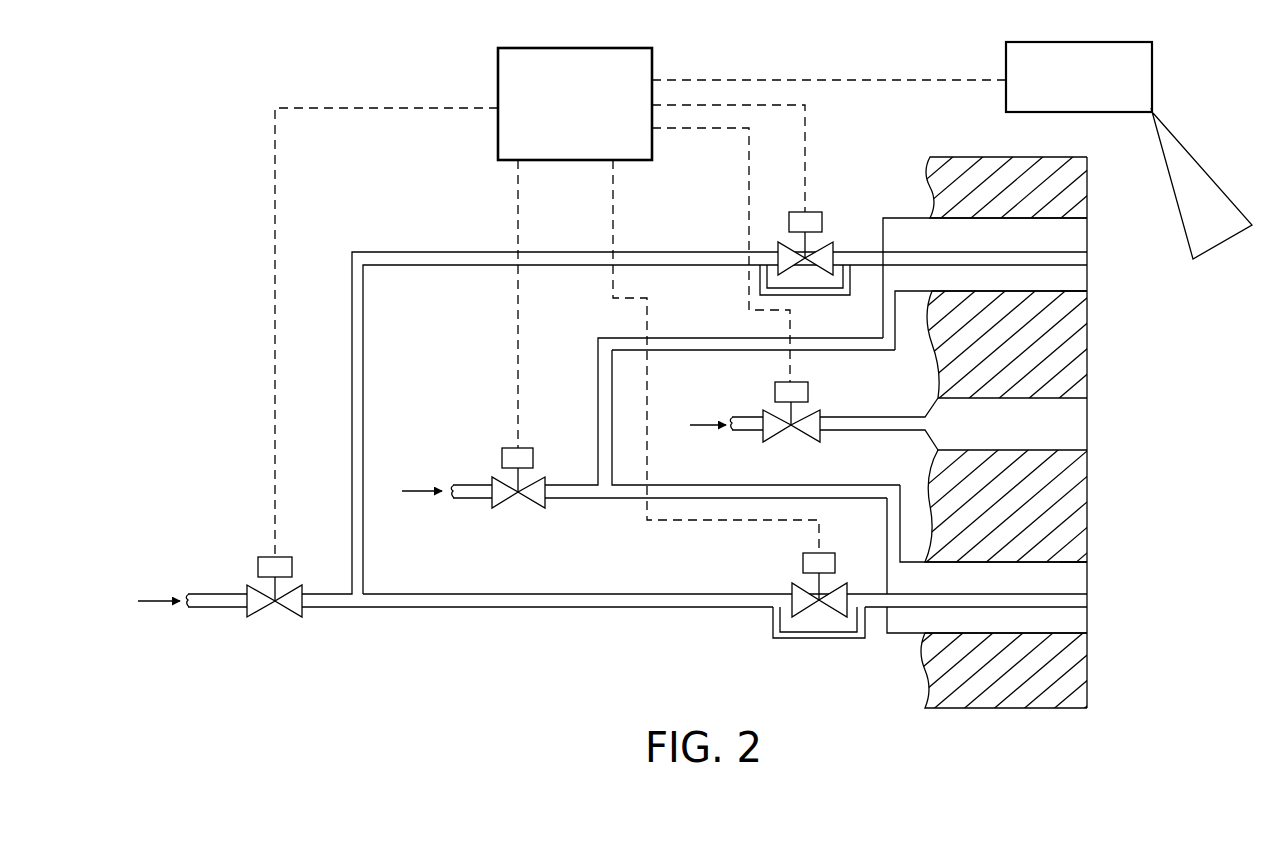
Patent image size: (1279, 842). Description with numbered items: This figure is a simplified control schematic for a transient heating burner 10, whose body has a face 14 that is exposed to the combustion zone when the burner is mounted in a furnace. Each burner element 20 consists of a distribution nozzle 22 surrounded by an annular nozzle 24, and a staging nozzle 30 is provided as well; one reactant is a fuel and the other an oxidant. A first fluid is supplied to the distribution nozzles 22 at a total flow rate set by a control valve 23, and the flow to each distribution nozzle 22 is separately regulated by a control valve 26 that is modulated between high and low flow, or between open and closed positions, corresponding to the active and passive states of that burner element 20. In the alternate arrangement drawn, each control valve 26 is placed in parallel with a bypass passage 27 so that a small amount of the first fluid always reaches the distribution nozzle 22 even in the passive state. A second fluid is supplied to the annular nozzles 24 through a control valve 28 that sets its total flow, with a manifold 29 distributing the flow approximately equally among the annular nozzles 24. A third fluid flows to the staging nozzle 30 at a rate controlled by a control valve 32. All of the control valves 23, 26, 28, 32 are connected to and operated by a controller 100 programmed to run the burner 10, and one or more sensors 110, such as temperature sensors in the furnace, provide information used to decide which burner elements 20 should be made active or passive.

The transient heating burner 10 is at (1021, 732).
The face 14 is at (1088, 484).
The burner element 20 is at (1091, 294).
The distribution nozzle 22 is at (1078, 257).
The annular nozzle 24 is at (1075, 235).
The control valve 23 is at (282, 563).
The control valve 26 is at (815, 212).
The bypass passage 27 is at (818, 295).
The control valve 28 is at (511, 448).
The manifold 29 is at (733, 343).
The staging nozzle 30 is at (1065, 417).
The control valve 32 is at (808, 390).
The controller 100 is at (640, 302).
The sensor 110 is at (1129, 150).